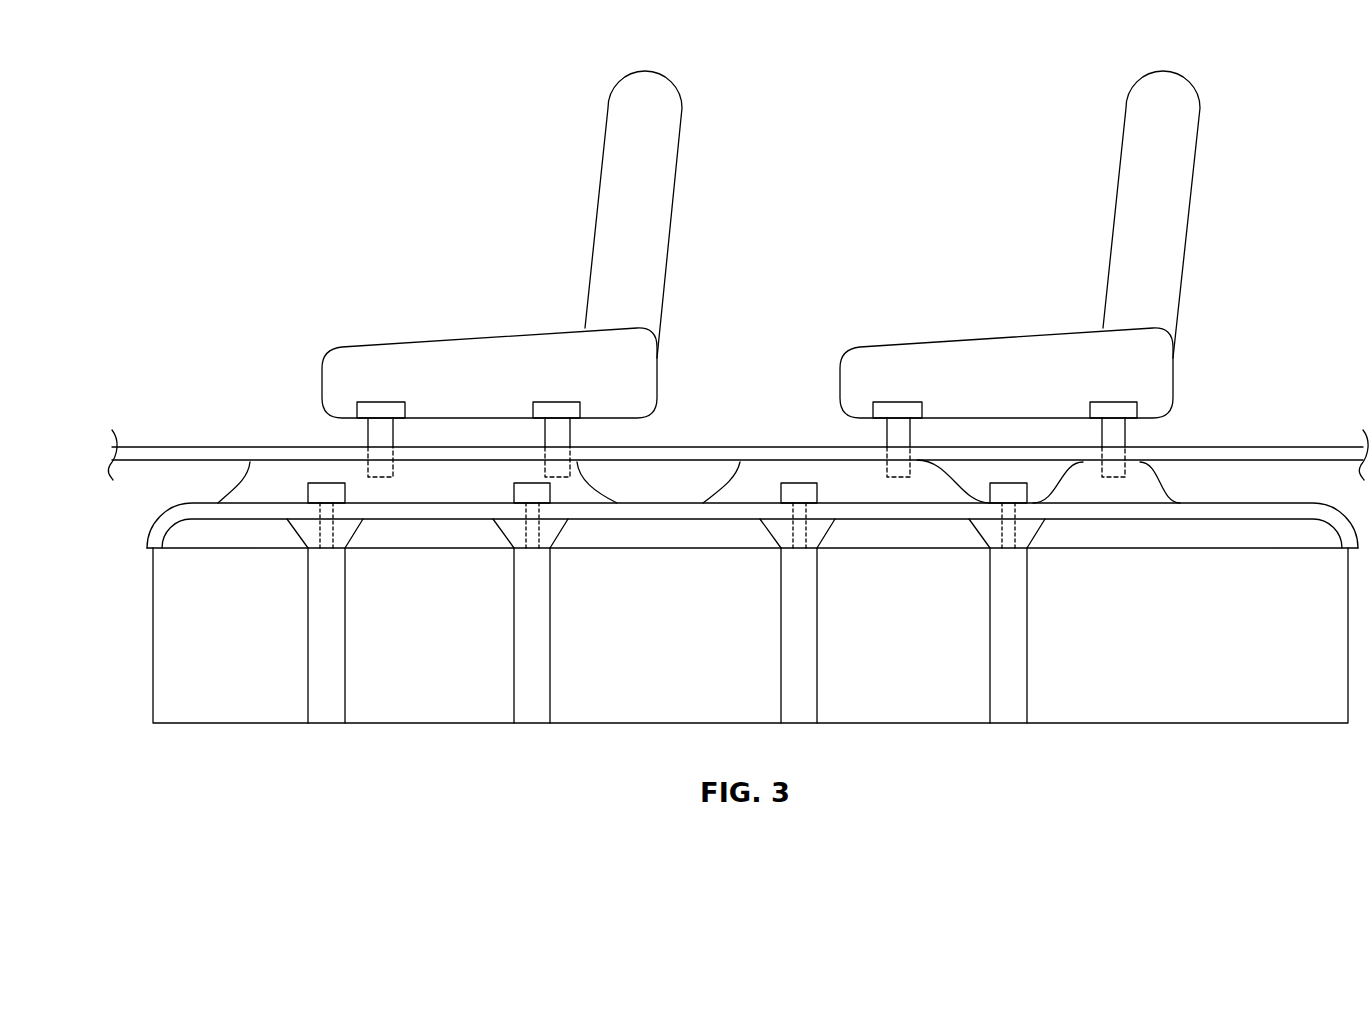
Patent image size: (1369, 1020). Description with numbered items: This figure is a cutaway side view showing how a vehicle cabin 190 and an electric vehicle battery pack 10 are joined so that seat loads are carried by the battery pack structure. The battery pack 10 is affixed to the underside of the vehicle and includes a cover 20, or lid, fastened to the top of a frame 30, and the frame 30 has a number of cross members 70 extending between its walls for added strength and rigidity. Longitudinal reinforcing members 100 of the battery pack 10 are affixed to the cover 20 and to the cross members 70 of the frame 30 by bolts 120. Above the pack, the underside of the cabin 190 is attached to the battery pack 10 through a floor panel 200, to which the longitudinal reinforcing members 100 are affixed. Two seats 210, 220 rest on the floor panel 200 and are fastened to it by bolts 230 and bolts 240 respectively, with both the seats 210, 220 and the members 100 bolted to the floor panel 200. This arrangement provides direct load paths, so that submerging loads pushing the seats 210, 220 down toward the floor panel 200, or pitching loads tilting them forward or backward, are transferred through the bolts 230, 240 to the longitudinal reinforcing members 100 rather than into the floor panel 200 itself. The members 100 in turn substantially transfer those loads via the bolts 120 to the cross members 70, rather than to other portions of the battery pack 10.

The vehicle cabin 190 is at (208, 154).
The battery pack 10 is at (118, 637).
The cover 20 is at (1267, 502).
The frame 30 is at (191, 616).
The cross members 70 is at (310, 660).
The longitudinal reinforcing members 100 is at (423, 495).
The bolts 120 is at (318, 483).
The floor panel 200 is at (1265, 446).
The seat 210 is at (614, 140).
The seat 220 is at (1133, 140).
The bolts 230 is at (380, 402).
The bolts 240 is at (898, 402).